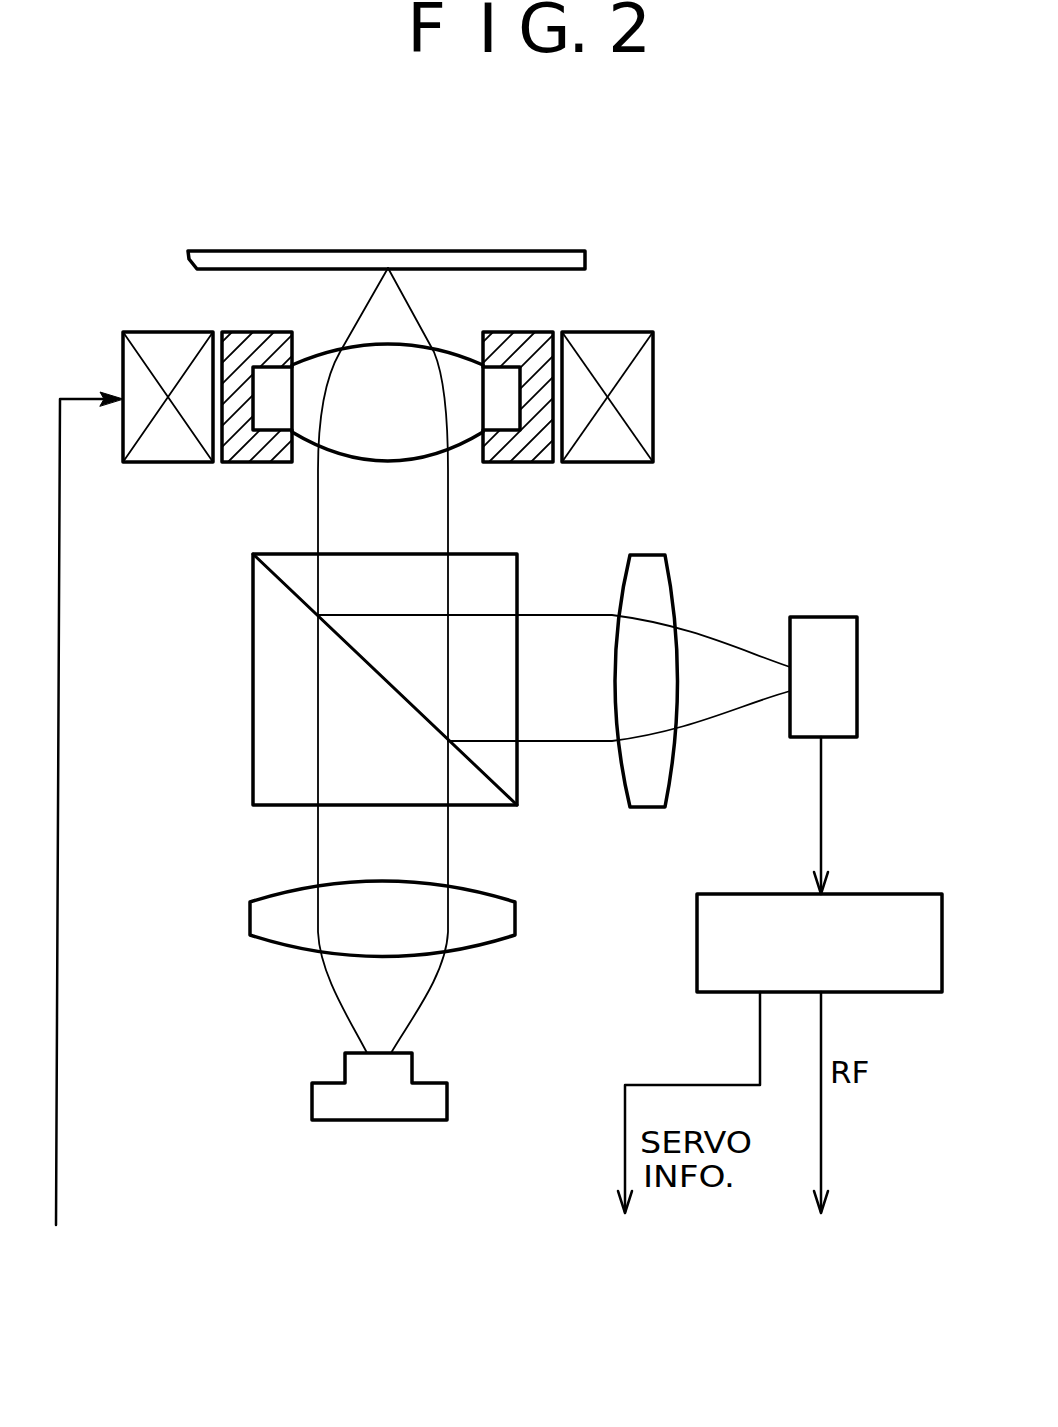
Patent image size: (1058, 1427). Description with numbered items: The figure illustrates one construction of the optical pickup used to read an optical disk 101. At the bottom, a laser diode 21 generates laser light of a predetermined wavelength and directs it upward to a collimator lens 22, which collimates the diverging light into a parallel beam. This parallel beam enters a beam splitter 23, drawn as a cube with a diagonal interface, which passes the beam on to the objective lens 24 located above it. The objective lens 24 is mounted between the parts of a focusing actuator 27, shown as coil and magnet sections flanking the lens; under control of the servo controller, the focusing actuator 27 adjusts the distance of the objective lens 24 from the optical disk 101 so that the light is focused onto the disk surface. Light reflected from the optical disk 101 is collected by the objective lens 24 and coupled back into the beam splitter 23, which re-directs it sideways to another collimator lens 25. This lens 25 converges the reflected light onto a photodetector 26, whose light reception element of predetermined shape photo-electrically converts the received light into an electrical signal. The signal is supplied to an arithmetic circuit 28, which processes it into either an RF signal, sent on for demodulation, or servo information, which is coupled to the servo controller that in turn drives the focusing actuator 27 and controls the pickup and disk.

The optical disk 101 is at (545, 251).
The focusing actuator 27 is at (148, 332).
The objective lens 24 is at (468, 452).
The beam splitter 23 is at (253, 731).
The photodetector 26 is at (825, 617).
The collimator lens 25 is at (642, 807).
The collimator lens 22 is at (517, 915).
The arithmetic circuit 28 is at (905, 894).
The laser diode 21 is at (378, 1122).